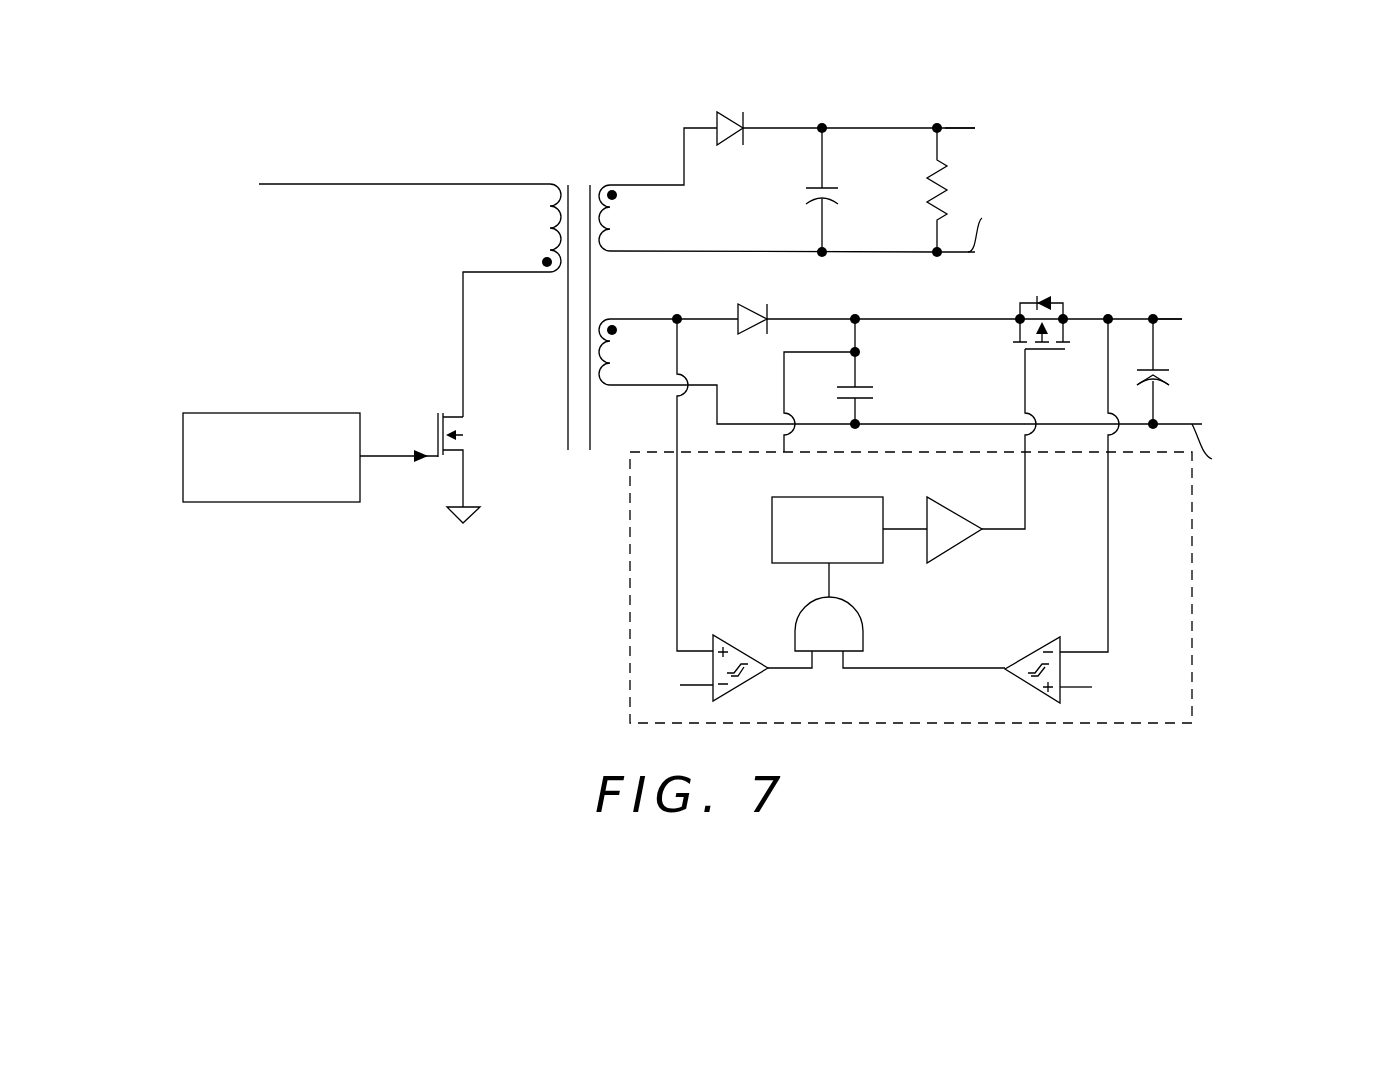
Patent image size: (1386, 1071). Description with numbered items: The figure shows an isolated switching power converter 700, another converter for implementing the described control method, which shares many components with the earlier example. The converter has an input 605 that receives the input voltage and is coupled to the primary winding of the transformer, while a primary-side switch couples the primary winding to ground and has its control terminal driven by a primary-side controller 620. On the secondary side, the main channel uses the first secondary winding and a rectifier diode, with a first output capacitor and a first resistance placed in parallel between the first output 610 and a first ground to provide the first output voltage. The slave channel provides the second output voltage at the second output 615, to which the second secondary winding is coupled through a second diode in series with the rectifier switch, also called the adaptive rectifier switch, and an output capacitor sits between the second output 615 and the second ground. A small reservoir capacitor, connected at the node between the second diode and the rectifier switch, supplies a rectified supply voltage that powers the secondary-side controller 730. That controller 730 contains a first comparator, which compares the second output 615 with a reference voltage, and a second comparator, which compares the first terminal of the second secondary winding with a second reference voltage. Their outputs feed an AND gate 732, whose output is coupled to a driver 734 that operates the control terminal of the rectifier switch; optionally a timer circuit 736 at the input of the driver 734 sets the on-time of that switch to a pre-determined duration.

The input 605 is at (259, 184).
The first output 610 is at (968, 128).
The second output 615 is at (1182, 319).
The primary-side controller 620 is at (262, 413).
The isolated switching power converter 700 is at (330, 548).
The secondary-side controller 730 is at (630, 630).
The AND gate 732 is at (795, 627).
The driver 734 is at (958, 512).
The timer circuit 736 is at (845, 497).